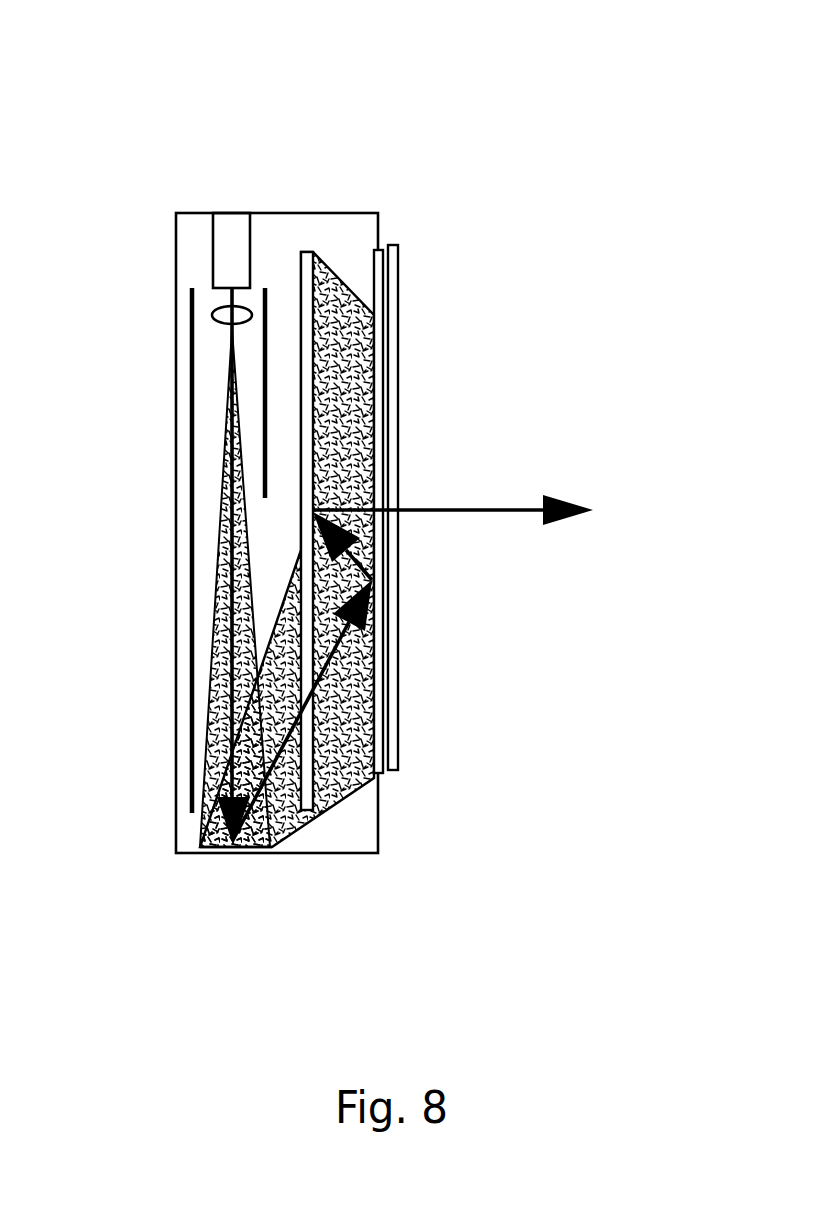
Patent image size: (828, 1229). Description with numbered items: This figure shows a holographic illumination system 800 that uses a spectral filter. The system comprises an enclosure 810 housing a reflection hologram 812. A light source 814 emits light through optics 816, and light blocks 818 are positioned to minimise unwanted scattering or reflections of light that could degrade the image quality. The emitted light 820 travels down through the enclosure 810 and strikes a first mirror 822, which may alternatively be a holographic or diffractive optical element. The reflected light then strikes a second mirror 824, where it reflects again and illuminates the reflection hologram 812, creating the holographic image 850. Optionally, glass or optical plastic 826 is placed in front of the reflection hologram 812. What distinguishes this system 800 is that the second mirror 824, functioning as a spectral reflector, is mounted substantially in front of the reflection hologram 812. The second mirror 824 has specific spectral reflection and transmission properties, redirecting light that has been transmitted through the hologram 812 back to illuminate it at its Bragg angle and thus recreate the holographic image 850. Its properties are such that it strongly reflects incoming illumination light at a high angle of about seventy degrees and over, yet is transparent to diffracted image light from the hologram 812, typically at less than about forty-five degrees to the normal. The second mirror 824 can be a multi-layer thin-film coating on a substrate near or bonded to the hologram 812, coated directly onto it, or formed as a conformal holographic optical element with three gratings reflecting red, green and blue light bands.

The holographic illumination system 800 is at (391, 88).
The enclosure 810 is at (176, 550).
The reflection hologram 812 is at (305, 398).
The light source 814 is at (230, 232).
The optics 816 is at (212, 316).
The light blocks 818 is at (227, 427).
The emitted light 820 is at (213, 642).
The first mirror 822 is at (215, 835).
The second mirror 824 is at (228, 722).
The glass or optical plastic 826 is at (391, 305).
The holographic image 850 is at (496, 525).